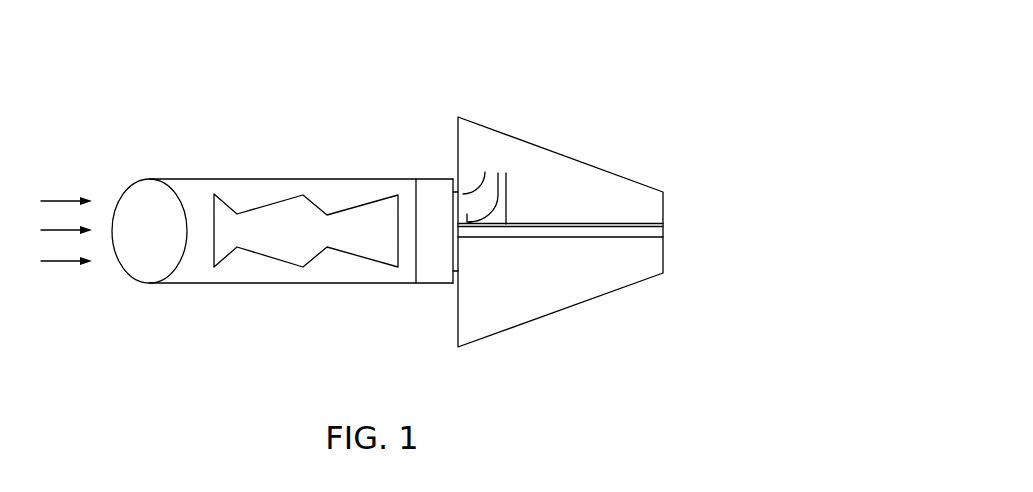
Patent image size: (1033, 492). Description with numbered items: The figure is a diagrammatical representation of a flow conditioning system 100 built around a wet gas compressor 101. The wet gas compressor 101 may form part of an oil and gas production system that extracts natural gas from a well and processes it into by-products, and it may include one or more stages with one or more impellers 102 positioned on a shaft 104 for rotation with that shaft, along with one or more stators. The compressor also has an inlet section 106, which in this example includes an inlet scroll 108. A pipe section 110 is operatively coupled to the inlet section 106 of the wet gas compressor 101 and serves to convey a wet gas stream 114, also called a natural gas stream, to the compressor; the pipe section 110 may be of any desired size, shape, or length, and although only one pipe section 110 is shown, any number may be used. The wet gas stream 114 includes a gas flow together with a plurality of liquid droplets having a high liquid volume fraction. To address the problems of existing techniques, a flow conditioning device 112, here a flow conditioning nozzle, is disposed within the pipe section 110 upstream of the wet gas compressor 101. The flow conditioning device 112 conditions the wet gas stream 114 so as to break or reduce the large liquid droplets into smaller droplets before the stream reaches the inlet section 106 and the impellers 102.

The flow conditioning system 100 is at (626, 53).
The wet gas compressor 101 is at (596, 322).
The impellers 102 is at (508, 212).
The shaft 104 is at (642, 224).
The inlet section 106 is at (447, 168).
The inlet scroll 108 is at (422, 178).
The pipe section 110 is at (250, 273).
The flow conditioning device 112 is at (230, 208).
The wet gas stream 114 is at (62, 198).